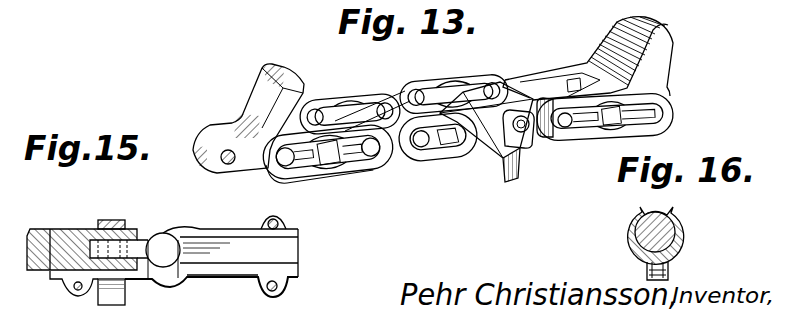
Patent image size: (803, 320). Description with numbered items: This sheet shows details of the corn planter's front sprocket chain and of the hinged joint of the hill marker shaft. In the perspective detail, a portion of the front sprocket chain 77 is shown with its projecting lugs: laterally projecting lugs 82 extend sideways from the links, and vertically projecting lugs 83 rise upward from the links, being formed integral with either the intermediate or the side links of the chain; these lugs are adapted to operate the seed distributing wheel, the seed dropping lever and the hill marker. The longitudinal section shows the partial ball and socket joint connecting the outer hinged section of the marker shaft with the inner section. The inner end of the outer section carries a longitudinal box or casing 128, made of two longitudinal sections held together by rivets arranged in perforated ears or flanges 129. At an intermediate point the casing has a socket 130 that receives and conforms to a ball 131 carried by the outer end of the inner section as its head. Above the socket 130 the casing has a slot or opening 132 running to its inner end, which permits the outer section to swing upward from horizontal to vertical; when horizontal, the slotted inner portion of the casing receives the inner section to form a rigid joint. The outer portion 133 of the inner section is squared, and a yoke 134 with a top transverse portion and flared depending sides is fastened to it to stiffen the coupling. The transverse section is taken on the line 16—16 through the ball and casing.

In FIG. 15, the section line 16— 16 is at (162, 304).
In FIG. 13, the sprocket chain 77 is at (454, 85).
In FIG. 13, the laterally projecting lugs 82 is at (494, 166).
In FIG. 13, the vertically projecting lugs 83 is at (268, 66).
In FIG. 15, the box or casing 128 is at (220, 283).
In FIG. 16, the box or casing 128 is at (682, 243).
In FIG. 15, the perforated ears or flanges 129 is at (276, 219).
In FIG. 16, the perforated ears or flanges 129 is at (670, 269).
In FIG. 15, the socket 130 is at (166, 284).
In FIG. 16, the socket 130 is at (634, 271).
In FIG. 15, the ball 131 is at (163, 250).
In FIG. 16, the ball 131 is at (632, 237).
In FIG. 15, the slot or opening 132 is at (178, 224).
In FIG. 16, the slot or opening 132 is at (660, 209).
In FIG. 15, the outer portion of the inner section 133 is at (45, 238).
In FIG. 15, the yoke 134 is at (102, 297).